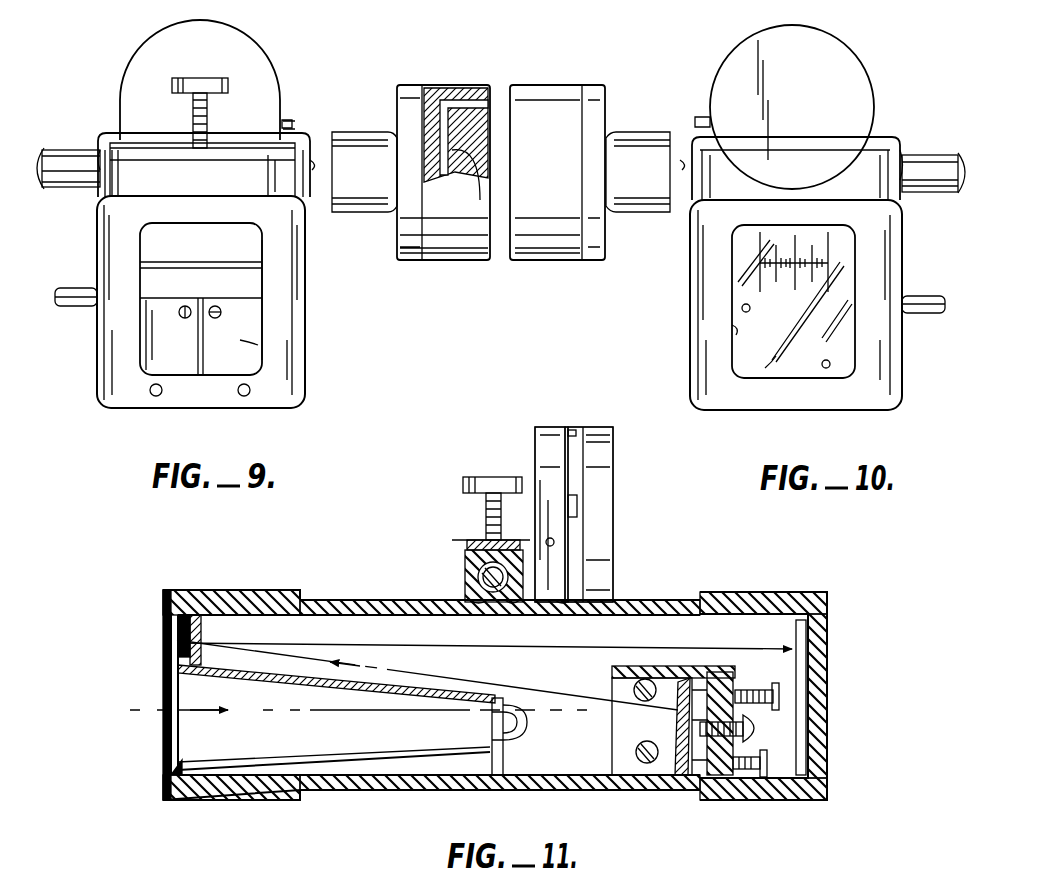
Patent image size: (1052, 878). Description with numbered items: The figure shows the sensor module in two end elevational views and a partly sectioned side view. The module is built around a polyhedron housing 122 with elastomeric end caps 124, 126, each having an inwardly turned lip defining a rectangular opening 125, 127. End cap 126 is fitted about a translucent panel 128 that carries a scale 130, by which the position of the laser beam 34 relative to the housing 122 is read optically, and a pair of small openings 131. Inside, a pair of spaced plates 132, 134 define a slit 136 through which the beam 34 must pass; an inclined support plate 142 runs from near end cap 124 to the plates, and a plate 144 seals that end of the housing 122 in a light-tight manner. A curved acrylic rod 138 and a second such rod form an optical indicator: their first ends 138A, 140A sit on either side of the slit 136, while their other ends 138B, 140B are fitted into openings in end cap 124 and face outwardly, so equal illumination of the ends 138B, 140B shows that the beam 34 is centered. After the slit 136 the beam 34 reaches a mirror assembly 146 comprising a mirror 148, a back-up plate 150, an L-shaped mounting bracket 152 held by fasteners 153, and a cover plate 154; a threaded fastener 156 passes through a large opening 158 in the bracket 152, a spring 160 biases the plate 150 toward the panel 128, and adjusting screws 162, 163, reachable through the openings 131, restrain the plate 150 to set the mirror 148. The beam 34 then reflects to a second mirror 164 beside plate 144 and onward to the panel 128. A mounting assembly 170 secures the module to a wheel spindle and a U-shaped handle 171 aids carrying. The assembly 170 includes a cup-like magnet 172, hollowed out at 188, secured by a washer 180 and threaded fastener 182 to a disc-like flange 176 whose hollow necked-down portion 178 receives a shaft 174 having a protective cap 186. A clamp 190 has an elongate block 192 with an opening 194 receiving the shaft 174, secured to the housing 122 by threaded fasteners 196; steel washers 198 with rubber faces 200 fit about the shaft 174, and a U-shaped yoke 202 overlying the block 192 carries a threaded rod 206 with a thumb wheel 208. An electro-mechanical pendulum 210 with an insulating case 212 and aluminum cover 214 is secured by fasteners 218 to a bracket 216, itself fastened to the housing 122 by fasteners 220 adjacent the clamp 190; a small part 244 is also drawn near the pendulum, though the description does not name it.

In FIG. 11, the laser beam 34 is at (132, 710).
In FIG. 11, the polyhedron housing 122 is at (575, 792).
In FIG. 9, the elastomeric end cap 124 is at (296, 345).
In FIG. 11, the elastomeric end cap 124 is at (242, 592).
In FIG. 9, the rectangular opening 125 is at (258, 287).
In FIG. 11, the rectangular opening 125 is at (172, 765).
In FIG. 10, the elastomeric end cap 126 is at (700, 355).
In FIG. 11, the elastomeric end cap 126 is at (762, 592).
In FIG. 10, the rectangular opening 127 is at (732, 328).
In FIG. 11, the rectangular opening 127 is at (812, 766).
In FIG. 10, the translucent panel 128 is at (762, 370).
In FIG. 10, the scale 130 is at (748, 262).
In FIG. 10, the small openings 131 is at (750, 310).
In FIG. 11, the small openings 131 is at (806, 700).
In FIG. 9, the plate 132 is at (152, 340).
In FIG. 11, the plate 132 is at (492, 729).
In FIG. 9, the plate 134 is at (245, 343).
In FIG. 9, the slit 136 is at (200, 382).
In FIG. 11, the curved acrylic rod 138 is at (352, 755).
In FIG. 9, the first end of rod 138A is at (188, 305).
In FIG. 11, the first end of rod 138A is at (476, 708).
In FIG. 9, the other end of rod 138B is at (156, 397).
In FIG. 11, the other end of rod 138B is at (170, 776).
In FIG. 9, the first end of rod 140A is at (242, 303).
In FIG. 9, the other end of rod 140B is at (246, 397).
In FIG. 9, the inclined support plate 142 is at (200, 280).
In FIG. 11, the inclined support plate 142 is at (385, 682).
In FIG. 9, the plate 144 is at (152, 238).
In FIG. 11, the plate 144 is at (178, 640).
In FIG. 11, the mirror assembly 146 is at (740, 648).
In FIG. 11, the mirror 148 is at (683, 680).
In FIG. 11, the back-up plate 150 is at (712, 670).
In FIG. 11, the L-shaped mounting bracket 152 is at (640, 730).
In FIG. 11, the fasteners 153 is at (634, 690).
In FIG. 11, the cover plate 154 is at (626, 670).
In FIG. 11, the threaded fastener 156 is at (762, 732).
In FIG. 11, the opening 158 is at (748, 726).
In FIG. 11, the spring 160 is at (760, 758).
In FIG. 11, the adjusting screw 162 is at (750, 688).
In FIG. 11, the adjusting screw 163 is at (750, 776).
In FIG. 11, the second mirror 164 is at (206, 638).
In FIG. 9, the mounting assembly 170 is at (345, 85).
In FIG. 10, the mounting assembly 170 is at (662, 85).
In FIG. 11, the mounting assembly 170 is at (430, 543).
In FIG. 9, the U-shaped handle 171 is at (64, 290).
In FIG. 10, the U-shaped handle 171 is at (948, 298).
In FIG. 9, the cylindrical cup-like magnet 172 is at (468, 255).
In FIG. 10, the cylindrical cup-like magnet 172 is at (560, 258).
In FIG. 9, the shaft 174 is at (74, 158).
In FIG. 10, the shaft 174 is at (952, 162).
In FIG. 11, the shaft 174 is at (480, 578).
In FIG. 9, the disc-like flange 176 is at (420, 256).
In FIG. 10, the disc-like flange 176 is at (592, 258).
In FIG. 9, the necked-down portion 178 is at (368, 212).
In FIG. 10, the necked-down portion 178 is at (652, 212).
In FIG. 9, the washer 180 is at (464, 137).
In FIG. 9, the threaded fastener 182 is at (474, 168).
In FIG. 9, the protective cap 186 is at (42, 188).
In FIG. 10, the protective cap 186 is at (962, 192).
In FIG. 9, the hollowed-out portion 188 is at (485, 128).
In FIG. 9, the clamp 190 is at (137, 105).
In FIG. 10, the clamp 190 is at (894, 108).
In FIG. 11, the clamp 190 is at (455, 500).
In FIG. 9, the elongate block 192 is at (204, 170).
In FIG. 11, the elongate block 192 is at (466, 560).
In FIG. 11, the opening 194 is at (480, 600).
In FIG. 11, the threaded fasteners 196 is at (497, 612).
In FIG. 9, the steel washers 198 is at (103, 140).
In FIG. 10, the steel washers 198 is at (900, 142).
In FIG. 9, the rubber faces 200 is at (322, 126).
In FIG. 10, the rubber faces 200 is at (885, 178).
In FIG. 9, the U-shaped yoke 202 is at (180, 135).
In FIG. 9, the threaded rod 206 is at (210, 112).
In FIG. 11, the threaded rod 206 is at (486, 522).
In FIG. 9, the thumb wheel 208 is at (186, 84).
In FIG. 11, the thumb wheel 208 is at (497, 480).
In FIG. 11, the electro-mechanical pendulum 210 is at (618, 465).
In FIG. 11, the insulating case 212 is at (574, 426).
In FIG. 10, the aluminum cover 214 is at (830, 55).
In FIG. 11, the aluminum cover 214 is at (598, 428).
In FIG. 9, the bracket 216 is at (165, 42).
In FIG. 11, the bracket 216 is at (542, 428).
In FIG. 11, the fasteners 218 is at (566, 428).
In FIG. 11, the fasteners 220 is at (560, 610).
In FIG. 9, the pin 244 is at (290, 120).
In FIG. 10, the pin 244 is at (702, 118).
In FIG. 11, the pin 244 is at (555, 542).